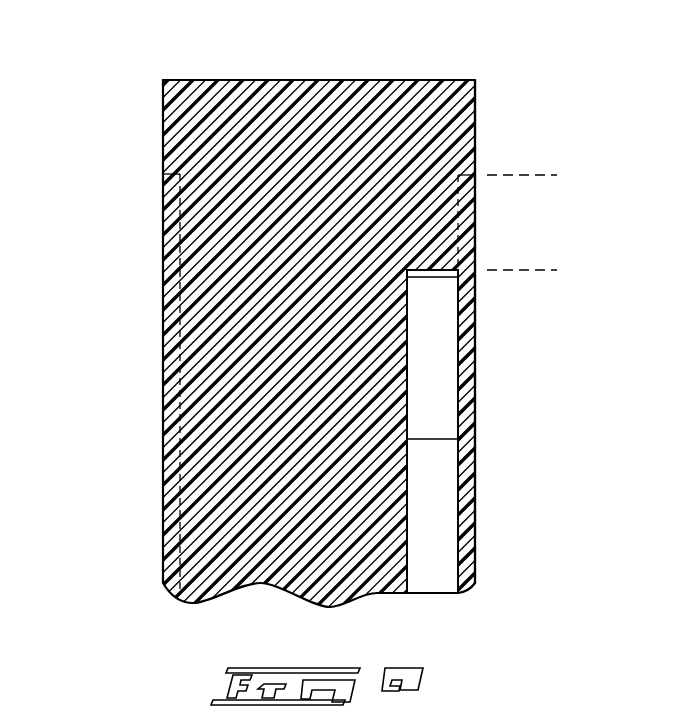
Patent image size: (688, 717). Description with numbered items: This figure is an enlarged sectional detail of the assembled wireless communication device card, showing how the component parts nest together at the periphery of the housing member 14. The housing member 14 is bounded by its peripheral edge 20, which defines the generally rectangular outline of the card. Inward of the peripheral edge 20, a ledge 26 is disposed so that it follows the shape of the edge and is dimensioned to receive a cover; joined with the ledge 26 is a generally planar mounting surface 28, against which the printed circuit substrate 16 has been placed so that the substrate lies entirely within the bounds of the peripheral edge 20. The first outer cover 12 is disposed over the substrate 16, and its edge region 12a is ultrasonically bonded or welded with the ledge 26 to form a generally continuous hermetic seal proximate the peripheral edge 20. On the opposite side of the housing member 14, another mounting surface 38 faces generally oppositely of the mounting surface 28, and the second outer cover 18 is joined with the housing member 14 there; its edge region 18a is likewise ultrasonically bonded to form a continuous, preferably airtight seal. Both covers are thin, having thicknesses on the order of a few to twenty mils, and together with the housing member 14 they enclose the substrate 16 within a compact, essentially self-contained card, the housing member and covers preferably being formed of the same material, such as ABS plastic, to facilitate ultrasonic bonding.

The first outer cover 12 is at (486, 322).
The edge region 12a is at (557, 175).
The housing member 14 is at (343, 70).
The printed circuit substrate 16 is at (472, 517).
The second outer cover 18 is at (155, 379).
The edge region 18a is at (146, 173).
The peripheral edge 20 is at (233, 80).
The ledge 26 is at (455, 221).
The mounting surface 28 is at (407, 408).
The mounting surface 38 is at (163, 303).